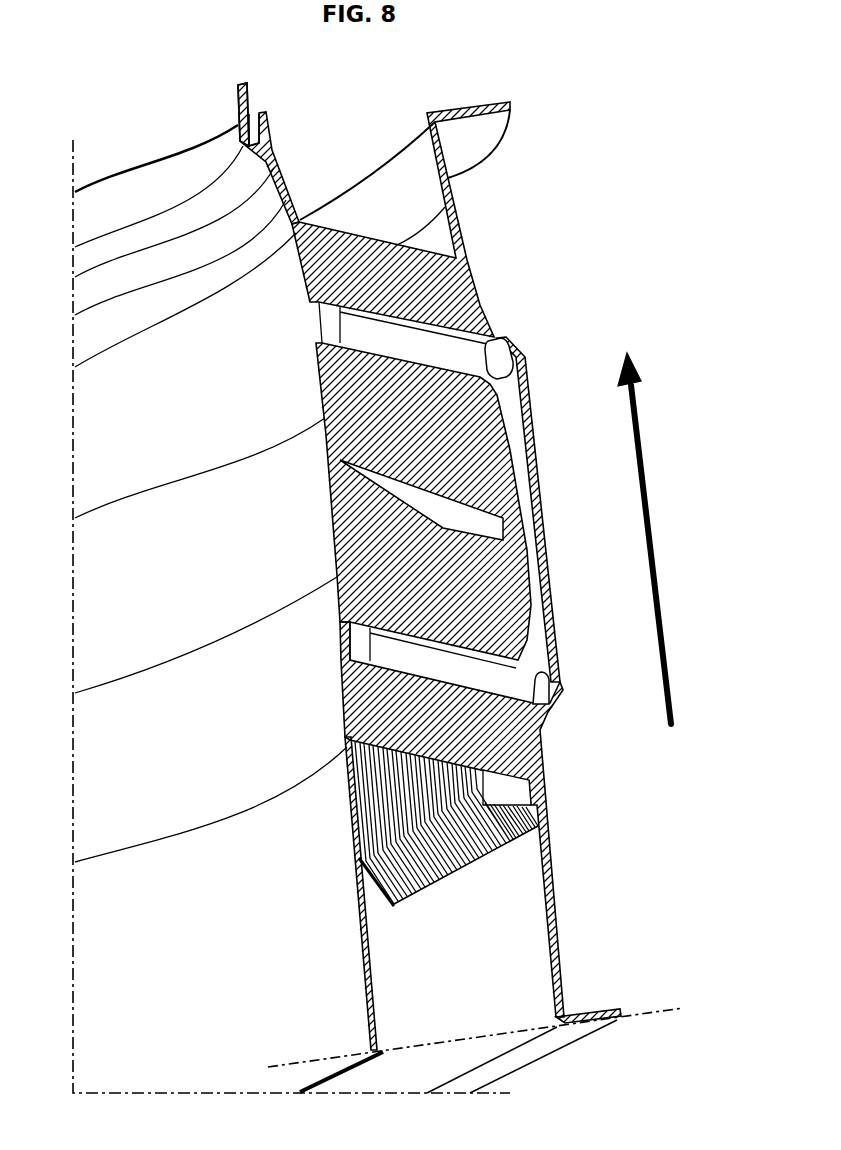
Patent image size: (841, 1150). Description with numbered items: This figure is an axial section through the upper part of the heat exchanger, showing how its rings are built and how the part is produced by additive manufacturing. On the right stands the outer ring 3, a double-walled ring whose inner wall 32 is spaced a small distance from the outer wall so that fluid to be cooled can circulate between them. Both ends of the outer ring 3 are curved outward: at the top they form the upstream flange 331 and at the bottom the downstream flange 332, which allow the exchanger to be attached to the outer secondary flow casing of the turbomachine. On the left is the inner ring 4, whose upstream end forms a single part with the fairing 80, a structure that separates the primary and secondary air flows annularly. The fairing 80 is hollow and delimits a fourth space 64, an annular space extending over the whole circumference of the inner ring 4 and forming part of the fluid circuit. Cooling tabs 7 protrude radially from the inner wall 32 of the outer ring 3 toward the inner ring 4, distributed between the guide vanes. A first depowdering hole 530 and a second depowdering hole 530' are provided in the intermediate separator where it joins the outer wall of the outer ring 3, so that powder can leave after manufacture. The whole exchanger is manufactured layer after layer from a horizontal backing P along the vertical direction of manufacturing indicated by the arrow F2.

The fairing 80 is at (243, 100).
The fourth space 64 is at (258, 123).
The inner ring 4 is at (283, 180).
The upstream flange 331 is at (468, 138).
The inner wall 32 is at (452, 196).
The first depowdering hole 530 is at (526, 347).
The second depowdering hole 530' is at (577, 698).
The cooling tabs 7 is at (452, 828).
The outer ring 3 is at (557, 929).
The downstream flange 332 is at (597, 1013).
The horizontal backing P is at (676, 1008).
The vertical direction of manufacturing F2 is at (649, 538).